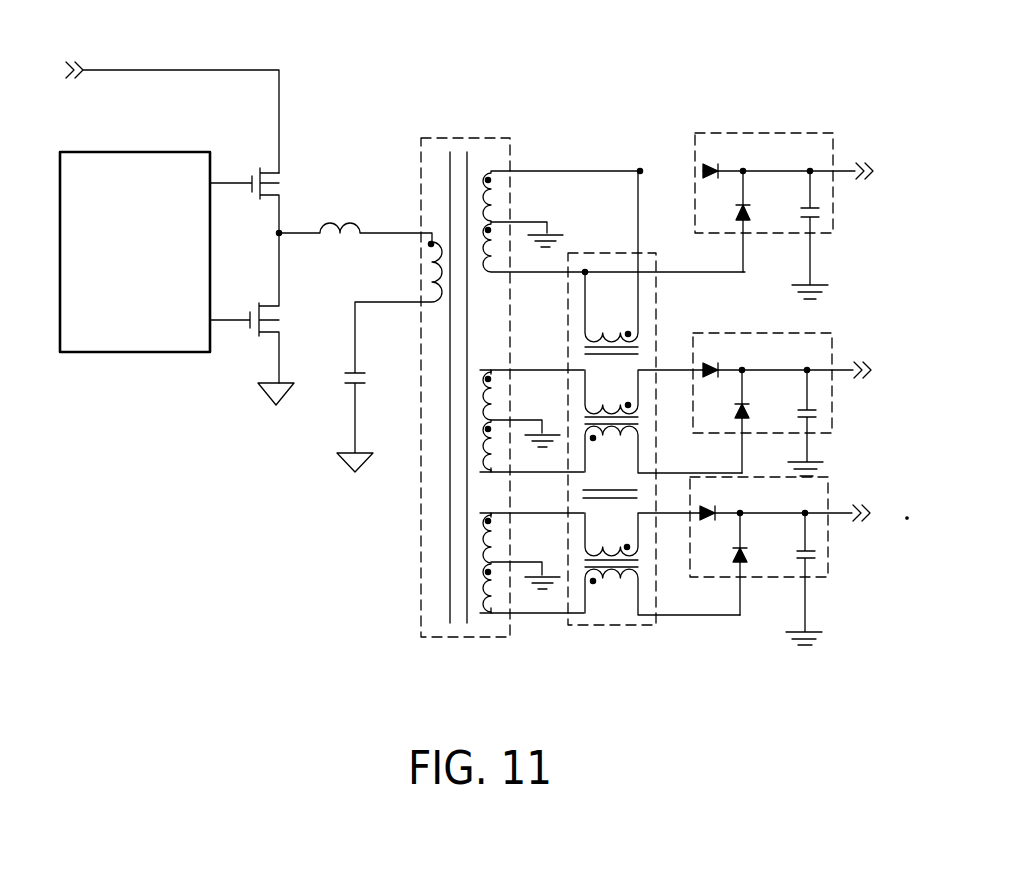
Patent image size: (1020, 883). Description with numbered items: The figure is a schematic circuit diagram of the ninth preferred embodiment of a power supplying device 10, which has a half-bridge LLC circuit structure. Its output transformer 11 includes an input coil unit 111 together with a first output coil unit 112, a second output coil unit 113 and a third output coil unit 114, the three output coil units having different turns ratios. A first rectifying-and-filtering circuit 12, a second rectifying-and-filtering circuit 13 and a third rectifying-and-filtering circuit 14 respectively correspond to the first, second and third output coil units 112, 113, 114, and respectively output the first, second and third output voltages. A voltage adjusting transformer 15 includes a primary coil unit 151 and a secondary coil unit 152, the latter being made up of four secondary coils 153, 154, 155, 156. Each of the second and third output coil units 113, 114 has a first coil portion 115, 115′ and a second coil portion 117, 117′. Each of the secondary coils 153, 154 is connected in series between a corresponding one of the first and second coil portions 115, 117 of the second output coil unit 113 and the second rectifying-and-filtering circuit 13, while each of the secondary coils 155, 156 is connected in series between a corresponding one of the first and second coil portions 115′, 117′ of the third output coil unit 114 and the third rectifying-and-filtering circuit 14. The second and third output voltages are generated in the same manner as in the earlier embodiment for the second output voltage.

The power supplying device 10 is at (663, 104).
The output transformer 11 is at (500, 133).
The first rectifying-and-filtering circuit 12 is at (808, 132).
The second rectifying-and-filtering circuit 13 is at (834, 333).
The third rectifying-and-filtering circuit 14 is at (830, 480).
The voltage adjusting transformer 15 is at (613, 251).
The input coil unit 111 is at (360, 347).
The first output coil unit 112 is at (496, 196).
The second output coil unit 113 is at (497, 387).
The third output coil unit 114 is at (494, 536).
The first coil portion 115 is at (480, 377).
The first coil portion 115′ is at (480, 519).
The second coil portion 117 is at (480, 466).
The second coil portion 117′ is at (481, 603).
The primary coil unit 151 is at (640, 337).
The secondary coil unit 152 is at (610, 404).
The secondary coil 153 is at (640, 408).
The secondary coil 154 is at (640, 436).
The secondary coil 155 is at (640, 550).
The secondary coil 156 is at (640, 575).